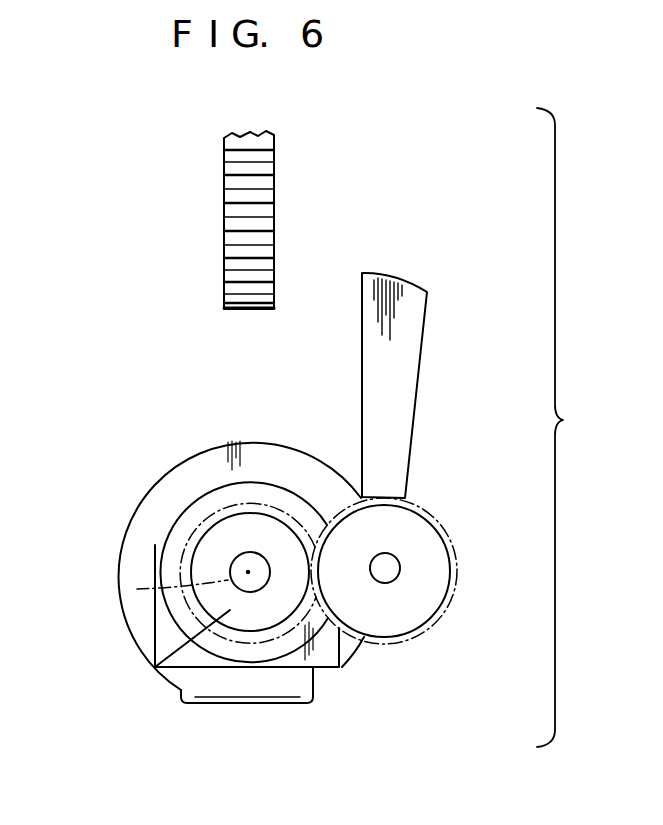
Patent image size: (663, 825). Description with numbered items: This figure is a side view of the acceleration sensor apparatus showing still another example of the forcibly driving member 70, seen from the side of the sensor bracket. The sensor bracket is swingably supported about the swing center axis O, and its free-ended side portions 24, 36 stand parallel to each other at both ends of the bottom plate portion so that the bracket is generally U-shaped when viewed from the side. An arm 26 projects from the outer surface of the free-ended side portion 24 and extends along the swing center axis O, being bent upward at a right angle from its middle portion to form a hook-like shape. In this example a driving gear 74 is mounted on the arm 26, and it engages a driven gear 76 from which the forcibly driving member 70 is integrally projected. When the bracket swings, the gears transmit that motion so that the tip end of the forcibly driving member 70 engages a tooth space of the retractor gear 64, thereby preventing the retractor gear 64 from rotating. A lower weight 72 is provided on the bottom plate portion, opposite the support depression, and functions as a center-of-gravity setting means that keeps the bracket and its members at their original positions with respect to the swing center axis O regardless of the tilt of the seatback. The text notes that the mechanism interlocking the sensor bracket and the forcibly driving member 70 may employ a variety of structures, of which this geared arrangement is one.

The retractor gear 64 is at (267, 186).
The forcibly driving member 70 is at (412, 365).
The free-ended side portion 36 is at (143, 627).
The lower weight 72 is at (287, 690).
The free-ended side portion 24 is at (188, 517).
The arm 26 is at (247, 572).
The swing center axis O is at (142, 594).
The driving gear 74 is at (155, 667).
The driven gear 76 is at (417, 588).